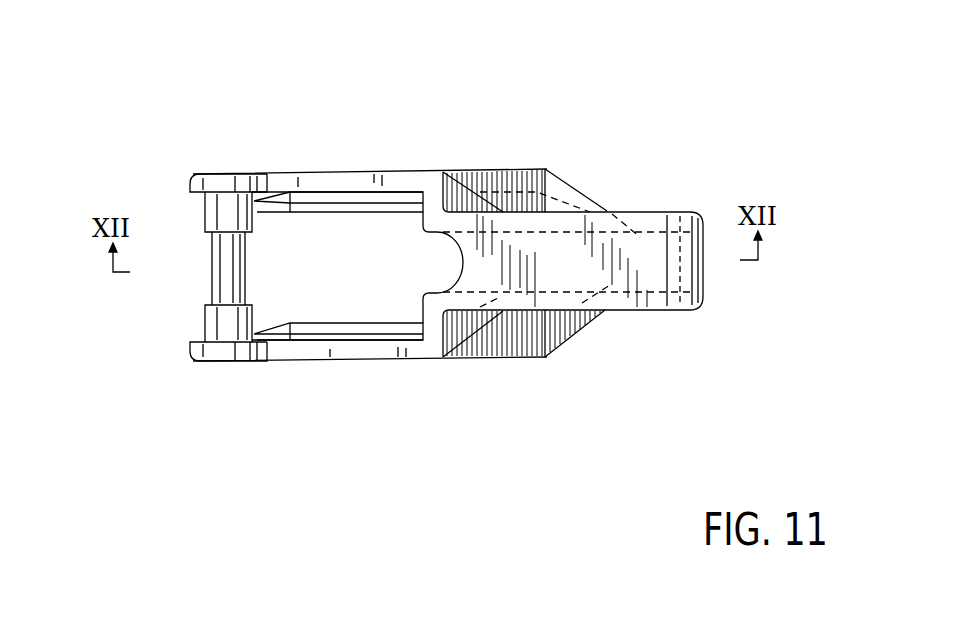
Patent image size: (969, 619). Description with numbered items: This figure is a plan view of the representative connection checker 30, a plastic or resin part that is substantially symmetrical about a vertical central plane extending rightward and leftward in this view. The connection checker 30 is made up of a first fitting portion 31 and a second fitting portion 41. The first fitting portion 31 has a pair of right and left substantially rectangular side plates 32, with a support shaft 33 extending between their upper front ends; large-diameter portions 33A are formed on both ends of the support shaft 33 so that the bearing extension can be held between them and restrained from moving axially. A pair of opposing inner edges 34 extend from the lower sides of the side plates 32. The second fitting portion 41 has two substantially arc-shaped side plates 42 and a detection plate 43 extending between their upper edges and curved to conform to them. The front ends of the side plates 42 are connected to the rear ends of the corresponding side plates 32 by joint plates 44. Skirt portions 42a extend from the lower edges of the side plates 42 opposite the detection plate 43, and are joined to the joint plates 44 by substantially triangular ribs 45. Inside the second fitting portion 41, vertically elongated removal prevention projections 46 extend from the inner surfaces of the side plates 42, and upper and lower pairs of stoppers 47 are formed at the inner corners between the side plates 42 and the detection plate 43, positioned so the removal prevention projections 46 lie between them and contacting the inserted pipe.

The connection checker 30 is at (482, 154).
The first fitting portion 31 is at (322, 173).
The side plates 32 is at (353, 172).
The support shaft 33 is at (208, 270).
The large-diameter portions 33A is at (208, 216).
The inner edges 34 is at (388, 192).
The second fitting portion 41 is at (622, 209).
The side plates 42 is at (556, 176).
The skirt portions 42a is at (583, 212).
The detection plate 43 is at (503, 350).
The joint plates 44 is at (437, 172).
The ribs 45 is at (480, 200).
The removal prevention projections 46 is at (652, 205).
The stoppers 47 is at (698, 205).